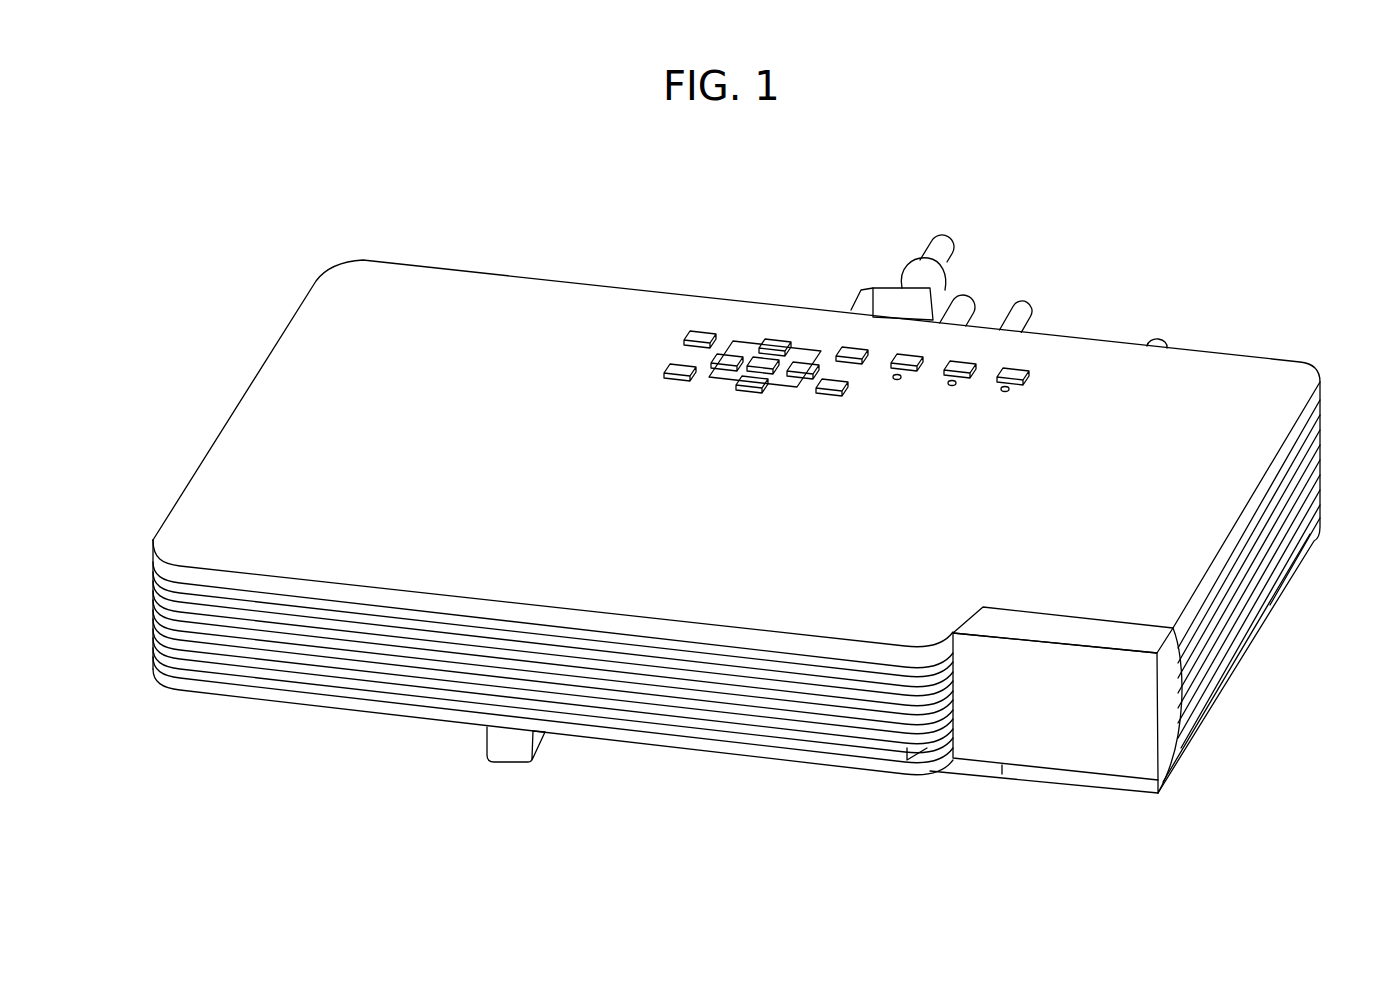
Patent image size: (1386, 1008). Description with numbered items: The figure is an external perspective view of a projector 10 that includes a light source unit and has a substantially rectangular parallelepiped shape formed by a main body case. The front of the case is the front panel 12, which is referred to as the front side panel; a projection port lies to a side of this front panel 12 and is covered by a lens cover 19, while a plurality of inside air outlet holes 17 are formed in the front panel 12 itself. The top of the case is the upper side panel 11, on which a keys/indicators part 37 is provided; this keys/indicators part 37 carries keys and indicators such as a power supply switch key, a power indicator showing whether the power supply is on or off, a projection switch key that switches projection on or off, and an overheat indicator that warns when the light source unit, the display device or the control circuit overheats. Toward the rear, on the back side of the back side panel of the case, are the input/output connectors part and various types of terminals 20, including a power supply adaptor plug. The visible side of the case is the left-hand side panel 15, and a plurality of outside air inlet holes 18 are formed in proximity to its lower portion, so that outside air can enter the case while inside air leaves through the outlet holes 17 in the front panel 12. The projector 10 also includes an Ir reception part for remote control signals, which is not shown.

The projector 10 is at (688, 240).
The upper side panel 11 is at (498, 308).
The front panel 12 is at (637, 725).
The left-hand side panel 15 is at (1248, 625).
The inside air outlet holes 17 is at (727, 743).
The outside air inlet holes 18 is at (1285, 533).
The lens cover 19 is at (1087, 747).
The terminals 20 is at (980, 275).
The keys/indicators part 37 is at (775, 327).